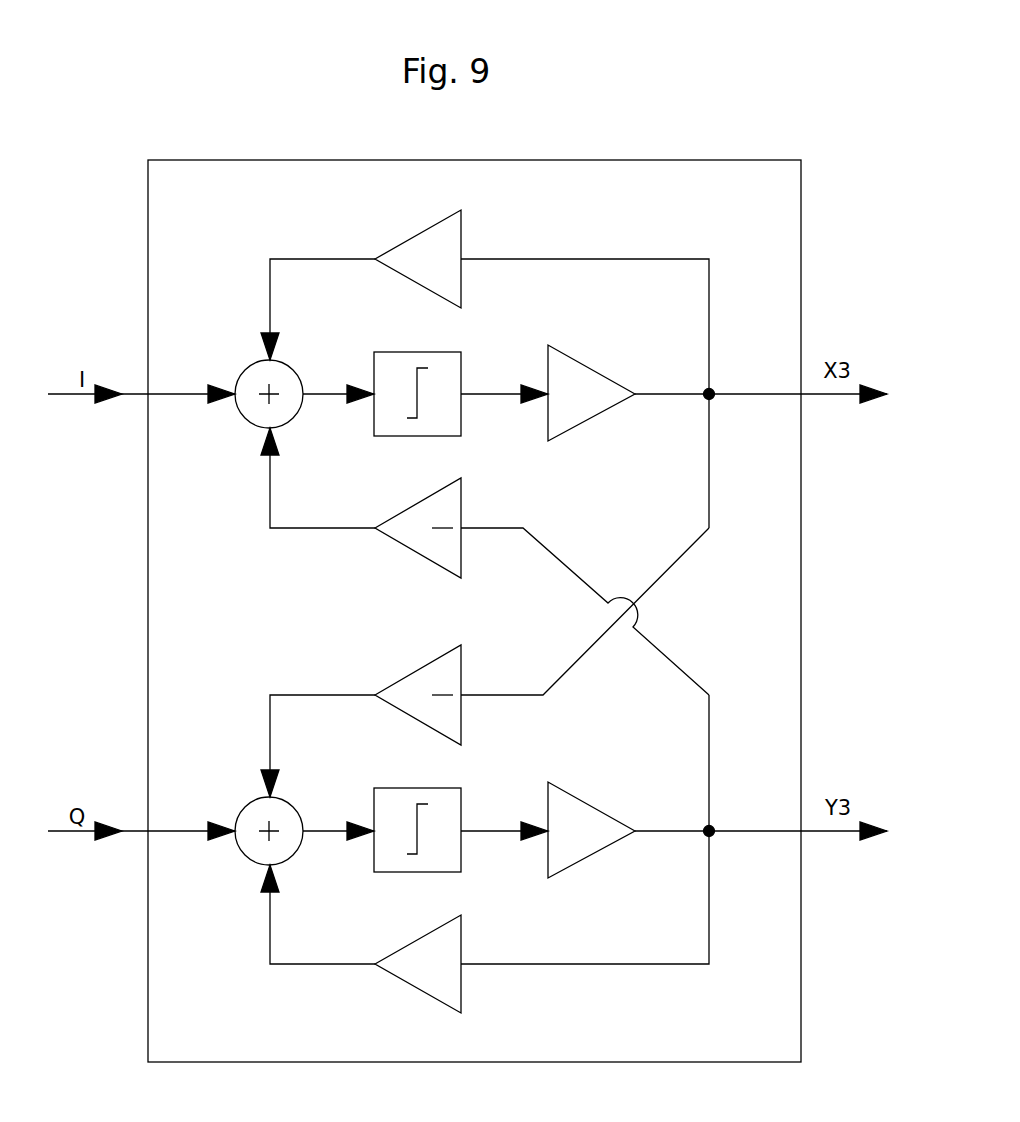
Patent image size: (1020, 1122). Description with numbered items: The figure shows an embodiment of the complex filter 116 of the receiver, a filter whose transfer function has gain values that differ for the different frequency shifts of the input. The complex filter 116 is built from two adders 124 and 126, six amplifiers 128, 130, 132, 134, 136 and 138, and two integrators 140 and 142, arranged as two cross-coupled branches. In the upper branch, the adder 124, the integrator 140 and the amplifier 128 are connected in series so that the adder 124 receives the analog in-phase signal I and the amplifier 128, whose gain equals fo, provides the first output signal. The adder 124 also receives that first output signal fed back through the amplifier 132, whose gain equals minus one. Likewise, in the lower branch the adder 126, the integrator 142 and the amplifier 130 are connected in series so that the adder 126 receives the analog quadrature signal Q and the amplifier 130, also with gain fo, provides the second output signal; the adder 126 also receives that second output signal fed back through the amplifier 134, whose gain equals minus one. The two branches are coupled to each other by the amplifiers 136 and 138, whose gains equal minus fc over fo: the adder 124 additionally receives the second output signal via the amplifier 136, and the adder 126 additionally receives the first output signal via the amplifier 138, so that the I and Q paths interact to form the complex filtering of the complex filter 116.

The complex filter 116 is at (801, 248).
The adder 124 is at (250, 380).
The adder 126 is at (250, 818).
The amplifier 128 is at (582, 373).
The amplifier 130 is at (582, 810).
The amplifier 132 is at (418, 245).
The amplifier 134 is at (418, 948).
The amplifier 136 is at (418, 513).
The amplifier 138 is at (418, 680).
The integrator 140 is at (397, 360).
The integrator 142 is at (397, 797).